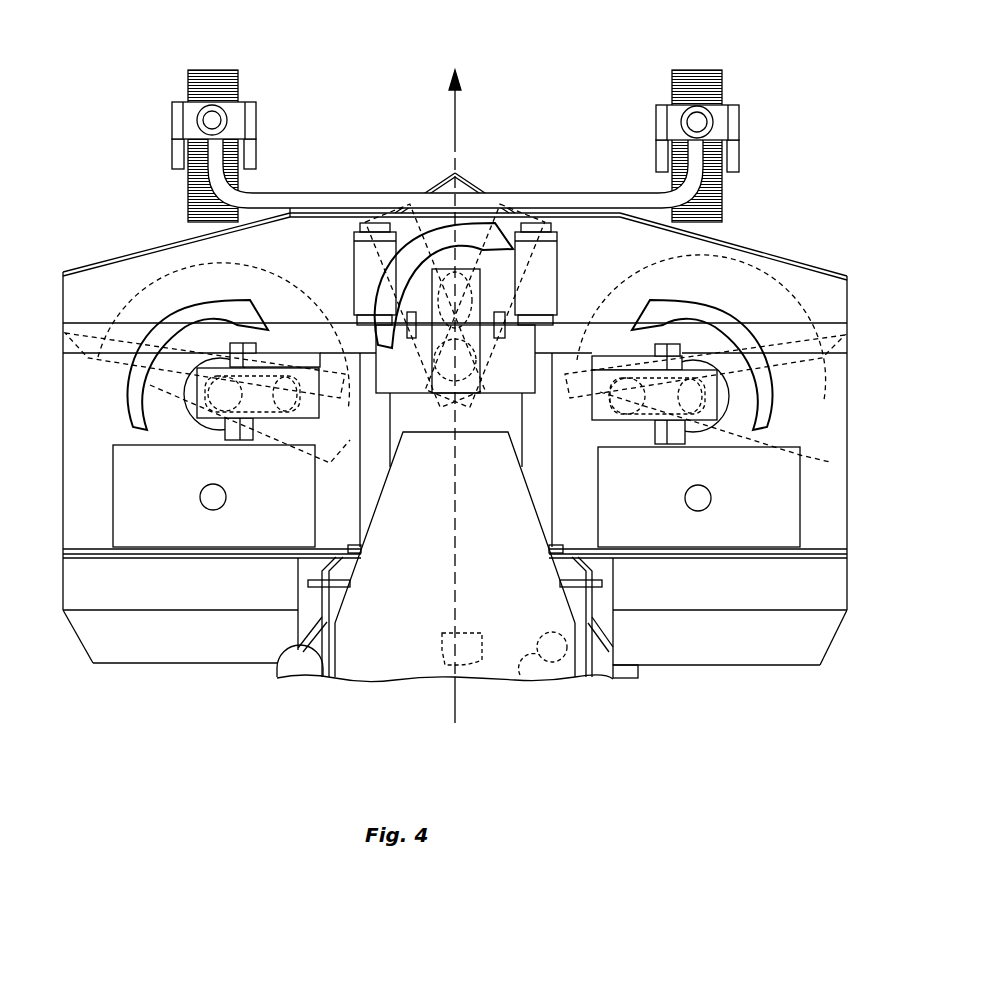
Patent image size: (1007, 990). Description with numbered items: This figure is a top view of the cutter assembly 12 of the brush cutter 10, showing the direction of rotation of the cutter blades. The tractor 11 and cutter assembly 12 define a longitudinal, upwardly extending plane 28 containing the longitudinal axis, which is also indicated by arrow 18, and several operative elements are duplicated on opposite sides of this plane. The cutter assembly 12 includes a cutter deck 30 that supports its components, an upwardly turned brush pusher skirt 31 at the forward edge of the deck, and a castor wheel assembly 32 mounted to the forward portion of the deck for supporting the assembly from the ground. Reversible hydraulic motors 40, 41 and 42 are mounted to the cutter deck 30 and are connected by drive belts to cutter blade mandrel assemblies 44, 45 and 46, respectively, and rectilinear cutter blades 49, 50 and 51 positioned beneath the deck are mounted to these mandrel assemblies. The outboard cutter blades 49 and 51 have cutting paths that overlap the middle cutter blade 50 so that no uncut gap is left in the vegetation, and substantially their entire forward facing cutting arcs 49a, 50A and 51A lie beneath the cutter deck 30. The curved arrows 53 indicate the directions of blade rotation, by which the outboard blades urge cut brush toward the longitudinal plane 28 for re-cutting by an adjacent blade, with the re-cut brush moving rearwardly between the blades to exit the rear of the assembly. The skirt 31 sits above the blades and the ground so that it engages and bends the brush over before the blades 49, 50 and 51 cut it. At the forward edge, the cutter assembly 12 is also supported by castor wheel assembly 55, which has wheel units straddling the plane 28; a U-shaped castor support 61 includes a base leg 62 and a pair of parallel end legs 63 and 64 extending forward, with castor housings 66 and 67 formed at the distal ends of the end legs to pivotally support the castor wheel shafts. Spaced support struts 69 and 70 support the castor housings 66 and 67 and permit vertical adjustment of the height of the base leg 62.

The brush cutter 10 is at (796, 165).
The tractor 11 is at (338, 678).
The cutter assembly 12 is at (850, 301).
The arrow indicating longitudinal axis 18 is at (457, 134).
The longitudinal plane 28 is at (458, 706).
The cutter deck 30 is at (830, 415).
The brush pusher skirt 31 is at (791, 263).
The castor wheel assembly 32 is at (722, 74).
The hydraulic motor 40 is at (306, 401).
The hydraulic motor 41 is at (440, 387).
The hydraulic motor 42 is at (638, 393).
The cutter blade mandrel assembly 44 is at (208, 425).
The cutter blade mandrel assembly 45 is at (466, 283).
The cutter blade mandrel assembly 46 is at (727, 397).
The cutter blade 49 is at (80, 340).
The cutting arc 49a is at (155, 270).
The cutter blade 50 is at (504, 378).
The cutting arc 50A is at (552, 247).
The cutter blade 51 is at (830, 461).
The cutting arc 51A is at (708, 327).
The rotation arrows 53 is at (282, 355).
The castor wheel assembly 55 is at (259, 103).
The U-shaped castor support 61 is at (562, 200).
The base leg 62 is at (338, 200).
The end leg 63 is at (216, 151).
The end leg 64 is at (700, 153).
The castor housing 66 is at (198, 121).
The castor housing 67 is at (700, 123).
The support strut 69 is at (354, 280).
The support strut 70 is at (546, 306).